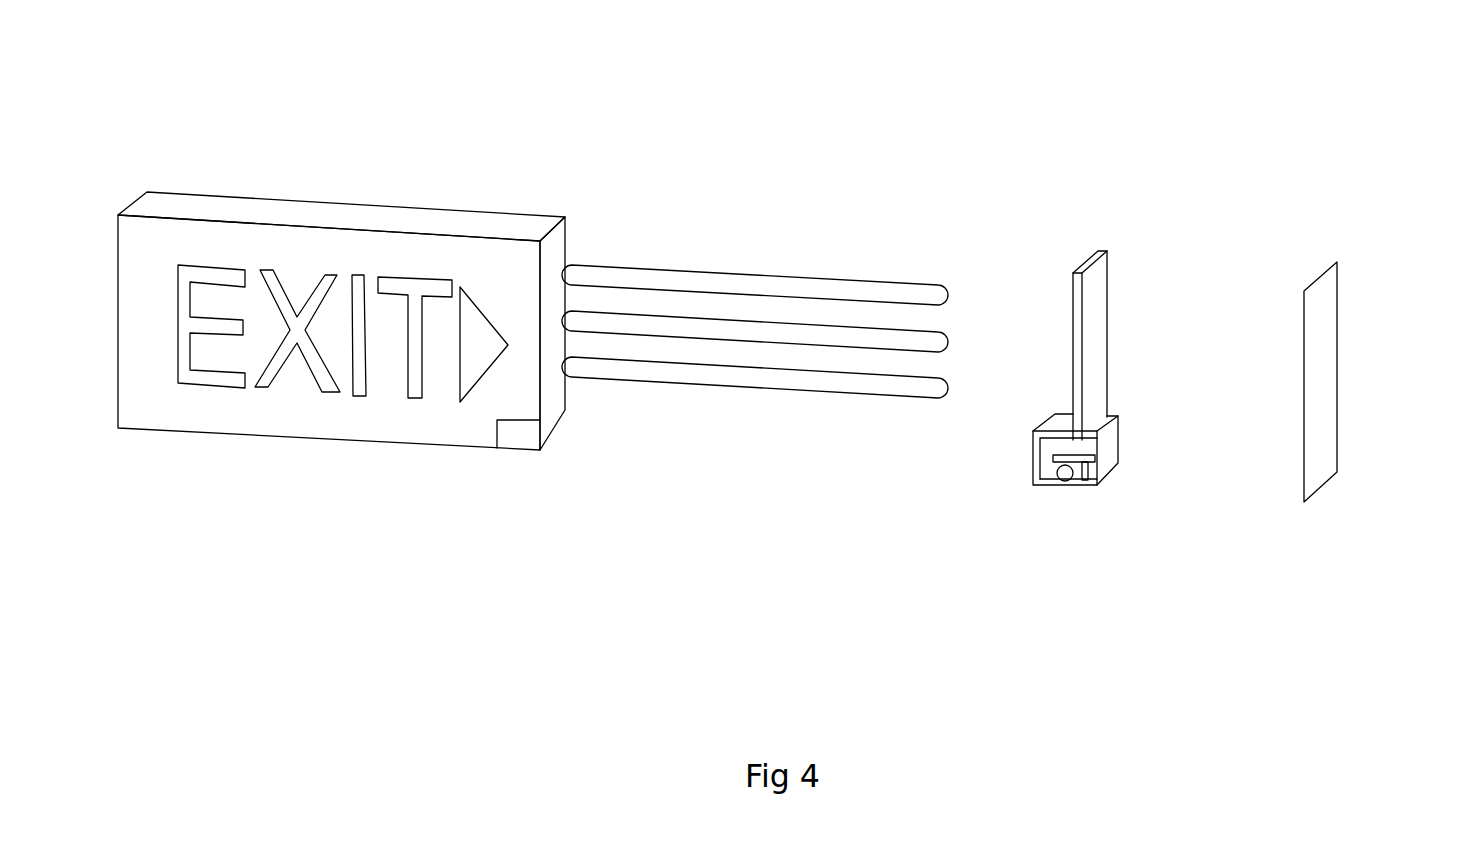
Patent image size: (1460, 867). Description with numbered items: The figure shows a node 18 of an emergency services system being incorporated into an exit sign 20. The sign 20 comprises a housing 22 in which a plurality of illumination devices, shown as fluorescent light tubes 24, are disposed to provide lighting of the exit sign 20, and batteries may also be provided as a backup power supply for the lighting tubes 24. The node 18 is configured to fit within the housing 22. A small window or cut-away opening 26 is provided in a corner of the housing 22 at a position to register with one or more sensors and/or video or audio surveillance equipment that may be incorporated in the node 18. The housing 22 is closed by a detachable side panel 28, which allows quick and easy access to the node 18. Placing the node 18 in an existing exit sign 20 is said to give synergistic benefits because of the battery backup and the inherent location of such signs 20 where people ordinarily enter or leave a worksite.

The node 18 is at (1090, 480).
The exit sign 20 is at (268, 580).
The housing 22 is at (503, 252).
The fluorescent light tubes 24 is at (892, 292).
The window or cut-away opening 26 is at (522, 433).
The detachable side panel 28 is at (1322, 338).